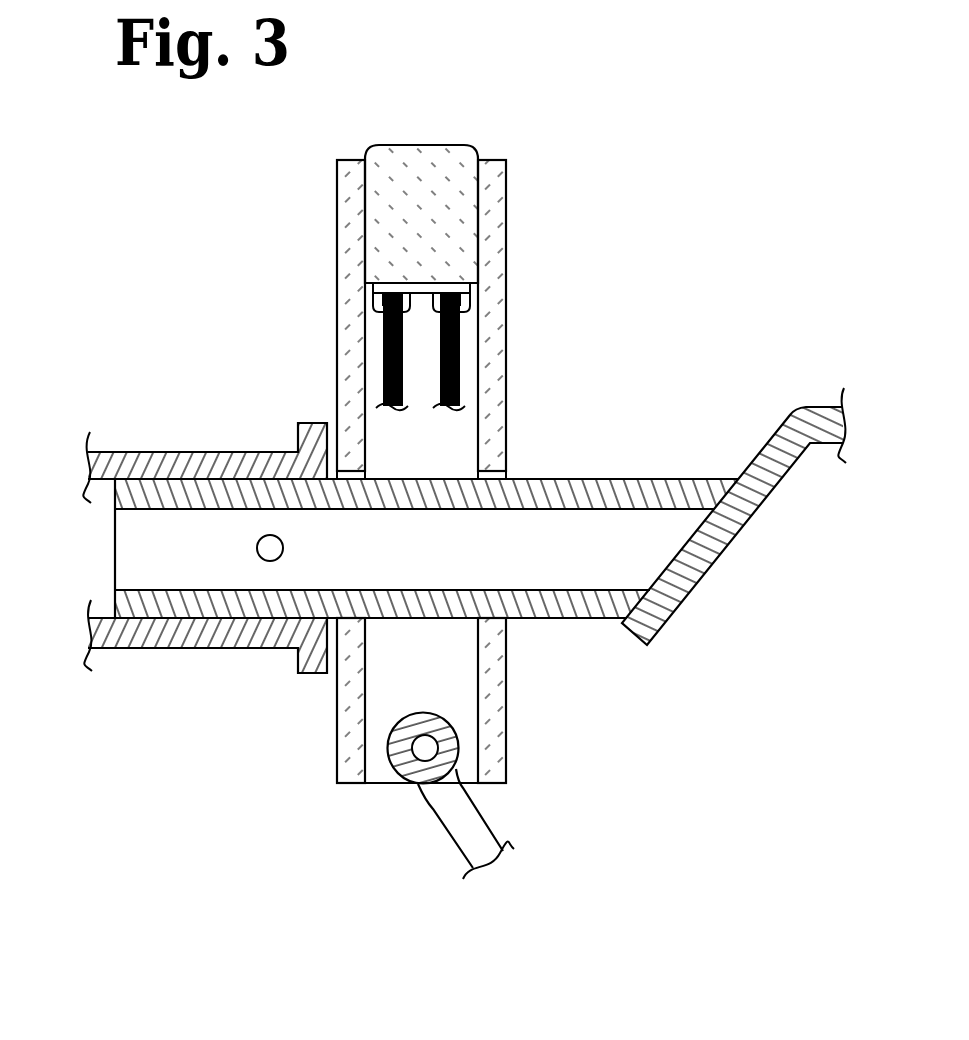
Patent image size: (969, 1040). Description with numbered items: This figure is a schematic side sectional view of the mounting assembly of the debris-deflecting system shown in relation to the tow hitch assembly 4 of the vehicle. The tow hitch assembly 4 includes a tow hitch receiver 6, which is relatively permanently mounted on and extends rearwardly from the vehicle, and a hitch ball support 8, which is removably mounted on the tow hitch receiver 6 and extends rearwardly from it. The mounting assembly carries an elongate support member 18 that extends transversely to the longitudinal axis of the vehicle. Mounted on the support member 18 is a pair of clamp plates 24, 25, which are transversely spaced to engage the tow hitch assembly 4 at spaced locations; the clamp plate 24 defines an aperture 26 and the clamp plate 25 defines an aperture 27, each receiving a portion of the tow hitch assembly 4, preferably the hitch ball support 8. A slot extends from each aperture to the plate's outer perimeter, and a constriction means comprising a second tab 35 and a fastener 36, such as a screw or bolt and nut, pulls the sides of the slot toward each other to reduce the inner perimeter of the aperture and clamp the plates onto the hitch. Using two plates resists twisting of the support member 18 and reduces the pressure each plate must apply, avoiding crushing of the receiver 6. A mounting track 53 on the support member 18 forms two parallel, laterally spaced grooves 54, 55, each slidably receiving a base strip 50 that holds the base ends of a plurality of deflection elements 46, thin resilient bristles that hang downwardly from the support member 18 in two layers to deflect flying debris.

The tow hitch assembly 4 is at (88, 639).
The tow hitch receiver 6 is at (292, 460).
The hitch ball support 8 is at (600, 603).
The support member 18 is at (433, 162).
The clamp plate 24 is at (493, 357).
The clamp plate 25 is at (350, 320).
The aperture 26 is at (492, 470).
The aperture 27 is at (353, 470).
The second tab 35 is at (380, 767).
The fastener 36 is at (432, 747).
The deflection elements 46 is at (388, 358).
The base strip 50 is at (378, 300).
The mounting track 53 is at (463, 283).
The groove 54 is at (443, 288).
The groove 55 is at (392, 285).